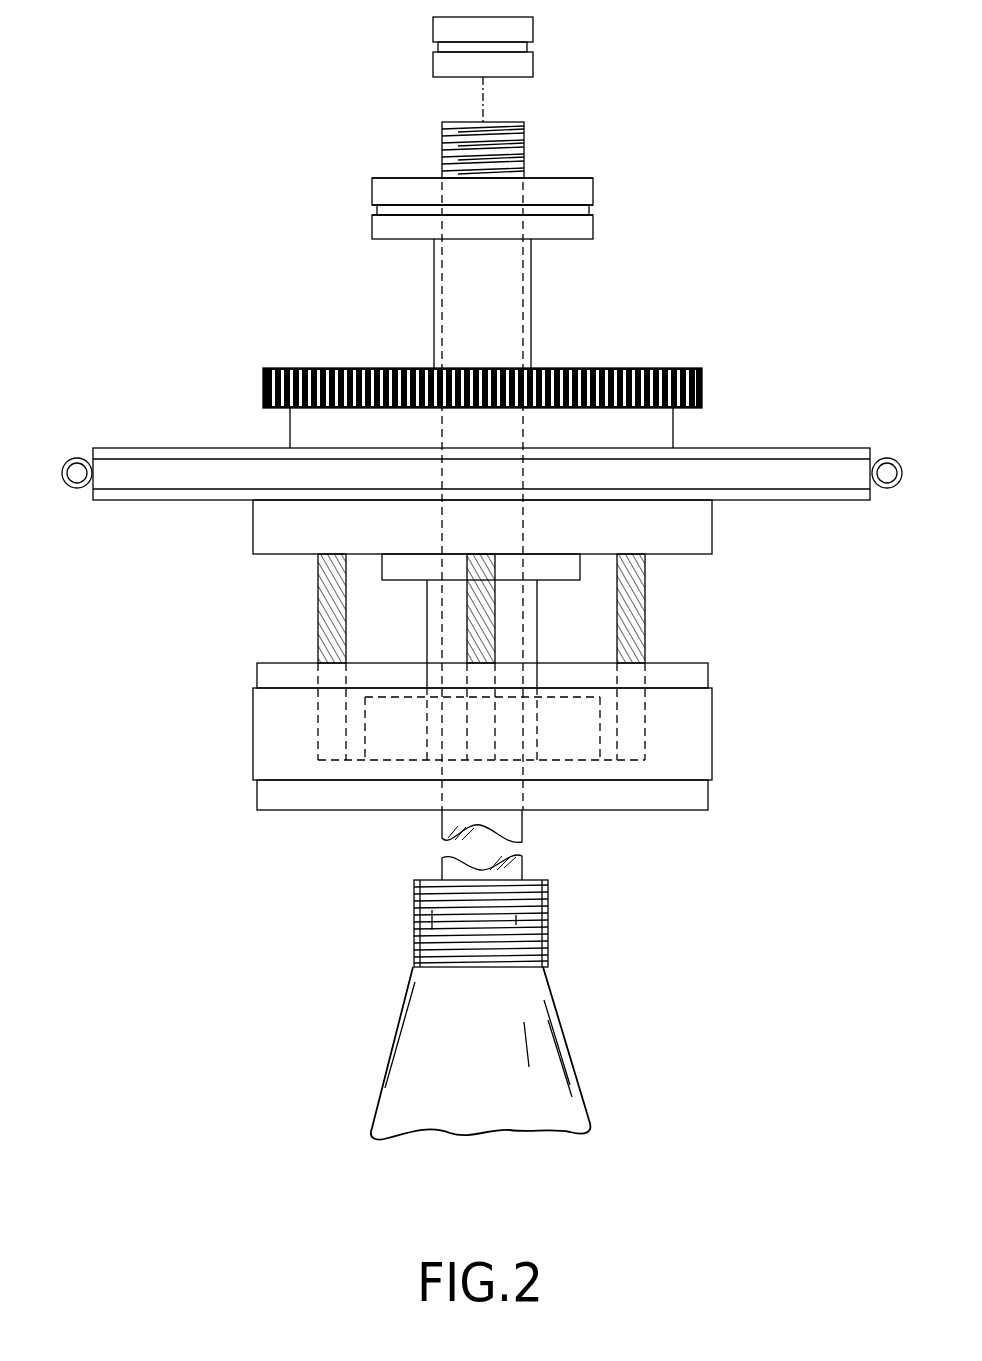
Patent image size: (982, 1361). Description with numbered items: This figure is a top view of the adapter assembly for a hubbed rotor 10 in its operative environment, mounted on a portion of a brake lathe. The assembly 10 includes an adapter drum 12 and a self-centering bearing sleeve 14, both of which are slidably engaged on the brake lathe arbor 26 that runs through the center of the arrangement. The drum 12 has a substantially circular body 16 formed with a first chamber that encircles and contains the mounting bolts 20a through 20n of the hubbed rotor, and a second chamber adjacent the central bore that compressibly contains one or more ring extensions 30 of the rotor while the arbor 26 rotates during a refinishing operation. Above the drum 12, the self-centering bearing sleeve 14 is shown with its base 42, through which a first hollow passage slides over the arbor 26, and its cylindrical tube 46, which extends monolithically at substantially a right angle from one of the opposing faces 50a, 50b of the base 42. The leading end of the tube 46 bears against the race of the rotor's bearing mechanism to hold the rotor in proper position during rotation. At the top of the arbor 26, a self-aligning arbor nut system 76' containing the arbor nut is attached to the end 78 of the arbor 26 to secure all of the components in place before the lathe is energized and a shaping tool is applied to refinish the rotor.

The adapter assembly for a hubbed rotor 10 is at (202, 670).
The adapter drum 12 is at (712, 742).
The self-centering bearing sleeve 14 is at (593, 190).
The substantially circular body 16 is at (257, 800).
The mounting bolt 20a is at (645, 597).
The mounting bolt 20n is at (318, 610).
The brake lathe arbor 26 is at (531, 320).
The ring extension 30 is at (557, 568).
The base 42 is at (593, 178).
The cylindrical tube 46 is at (434, 310).
The opposing face 50a is at (593, 239).
The opposing face 50b is at (383, 185).
The self-aligning arbor nut system 76' is at (541, 61).
The end 78 is at (524, 122).